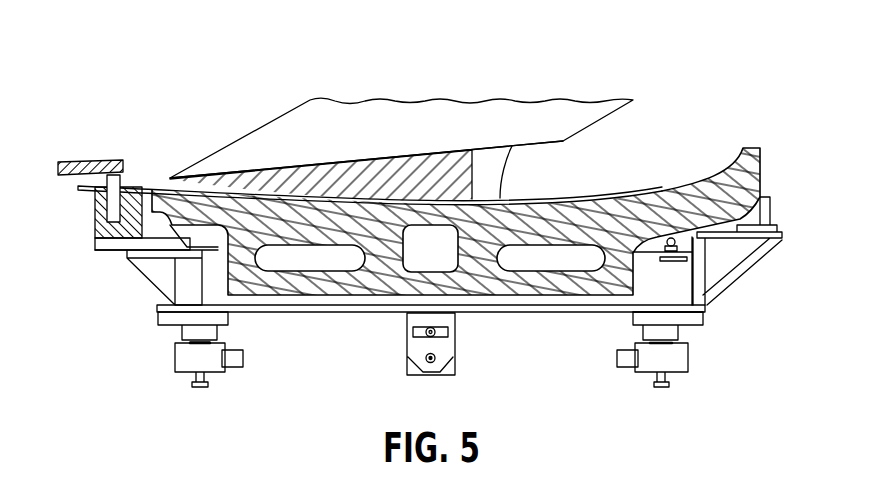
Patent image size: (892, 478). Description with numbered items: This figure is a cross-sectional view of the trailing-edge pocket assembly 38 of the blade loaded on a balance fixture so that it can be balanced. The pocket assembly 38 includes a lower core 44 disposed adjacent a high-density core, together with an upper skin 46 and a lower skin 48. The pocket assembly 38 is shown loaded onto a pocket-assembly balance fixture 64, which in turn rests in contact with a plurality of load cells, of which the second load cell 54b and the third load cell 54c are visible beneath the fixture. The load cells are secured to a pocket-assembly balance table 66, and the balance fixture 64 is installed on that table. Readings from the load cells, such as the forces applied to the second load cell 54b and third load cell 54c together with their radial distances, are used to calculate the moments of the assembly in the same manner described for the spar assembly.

The trailing-edge pocket assembly 38 is at (264, 143).
The lower core 44 is at (340, 174).
The upper skin 46 is at (532, 198).
The lower skin 48 is at (423, 120).
The second load cell 54b is at (193, 362).
The third load cell 54c is at (673, 357).
The pocket-assembly balance fixture 64 is at (388, 288).
The pocket-assembly balance table 66 is at (175, 278).